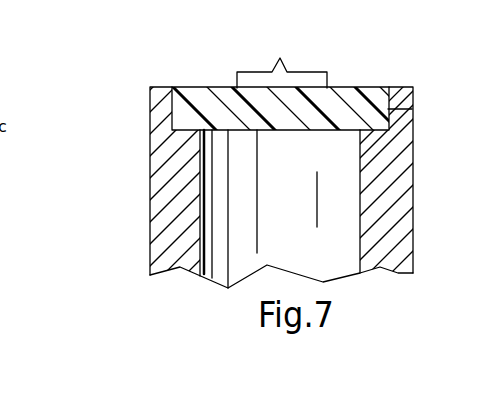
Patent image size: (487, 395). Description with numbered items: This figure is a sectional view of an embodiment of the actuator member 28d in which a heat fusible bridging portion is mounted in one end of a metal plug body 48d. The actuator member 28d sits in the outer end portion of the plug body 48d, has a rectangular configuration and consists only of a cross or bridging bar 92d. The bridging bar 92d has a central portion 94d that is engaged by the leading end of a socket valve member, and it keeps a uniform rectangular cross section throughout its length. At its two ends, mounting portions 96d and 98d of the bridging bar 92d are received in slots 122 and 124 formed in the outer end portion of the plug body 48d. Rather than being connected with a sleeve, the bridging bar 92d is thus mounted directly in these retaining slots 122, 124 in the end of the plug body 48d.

The actuator member 28d is at (344, 79).
The plug body 48d is at (180, 213).
The bridging bar 92d is at (290, 140).
The central portion 94d is at (282, 63).
The mounting portion 96d is at (182, 112).
The mounting portion 98d is at (379, 97).
The slot 122 is at (160, 109).
The slot 124 is at (390, 109).